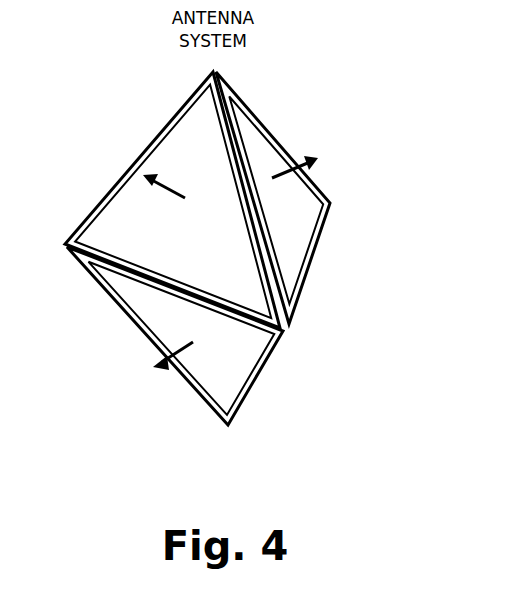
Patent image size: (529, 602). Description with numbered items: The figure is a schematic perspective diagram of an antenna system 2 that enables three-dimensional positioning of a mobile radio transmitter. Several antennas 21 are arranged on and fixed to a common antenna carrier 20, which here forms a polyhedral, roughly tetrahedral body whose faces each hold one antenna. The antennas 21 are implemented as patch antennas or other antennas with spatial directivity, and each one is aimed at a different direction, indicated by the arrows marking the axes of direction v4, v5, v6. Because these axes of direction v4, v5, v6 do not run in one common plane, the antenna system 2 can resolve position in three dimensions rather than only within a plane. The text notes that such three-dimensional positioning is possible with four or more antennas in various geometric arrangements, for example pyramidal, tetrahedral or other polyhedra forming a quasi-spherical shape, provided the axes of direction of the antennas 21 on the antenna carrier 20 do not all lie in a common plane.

The antenna system 2 is at (189, 259).
The antenna carrier 20 is at (281, 340).
The antennas 21 is at (187, 403).
The direction v4 is at (167, 182).
The direction v5 is at (158, 364).
The direction v6 is at (310, 159).